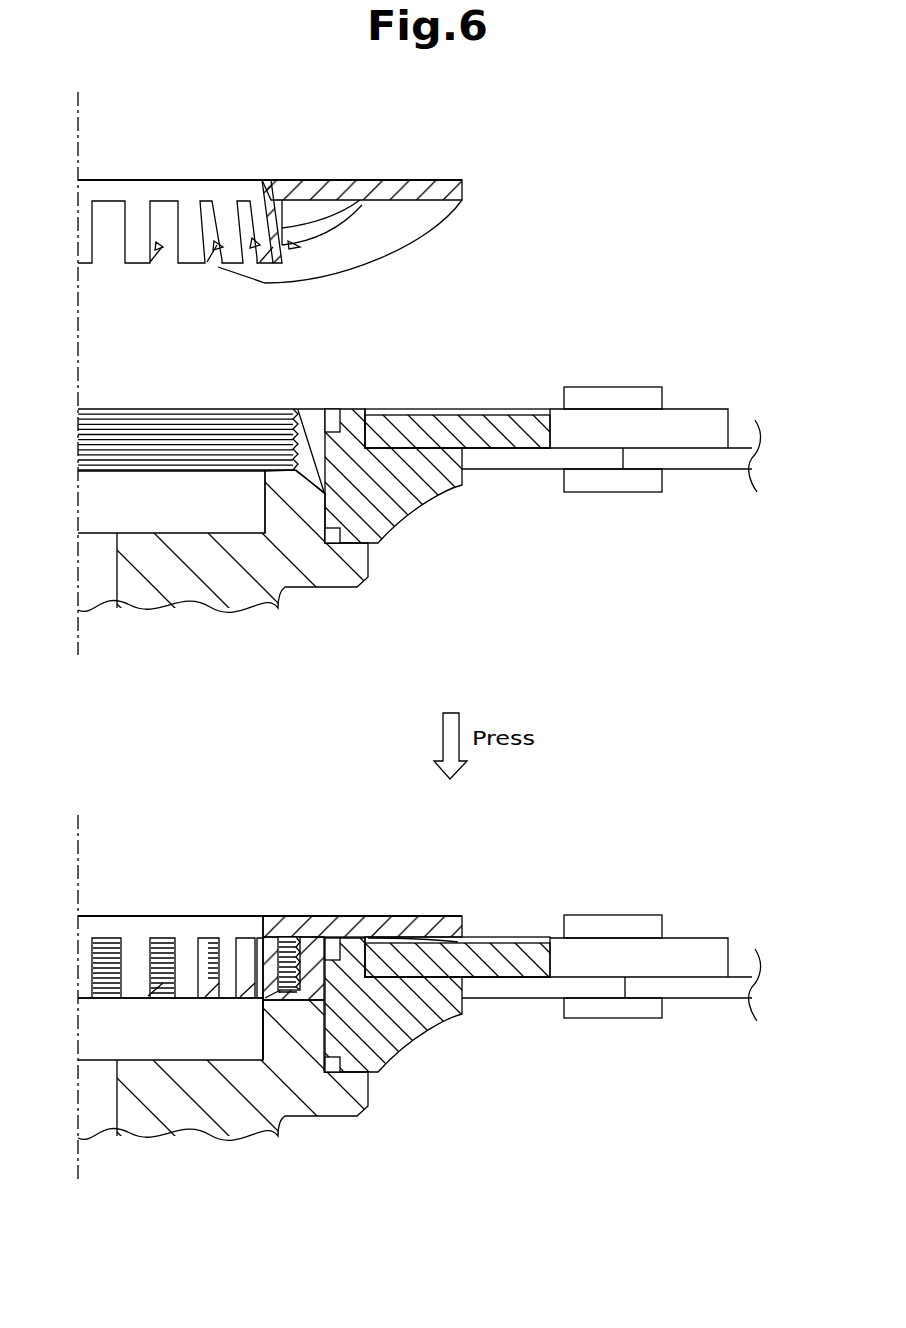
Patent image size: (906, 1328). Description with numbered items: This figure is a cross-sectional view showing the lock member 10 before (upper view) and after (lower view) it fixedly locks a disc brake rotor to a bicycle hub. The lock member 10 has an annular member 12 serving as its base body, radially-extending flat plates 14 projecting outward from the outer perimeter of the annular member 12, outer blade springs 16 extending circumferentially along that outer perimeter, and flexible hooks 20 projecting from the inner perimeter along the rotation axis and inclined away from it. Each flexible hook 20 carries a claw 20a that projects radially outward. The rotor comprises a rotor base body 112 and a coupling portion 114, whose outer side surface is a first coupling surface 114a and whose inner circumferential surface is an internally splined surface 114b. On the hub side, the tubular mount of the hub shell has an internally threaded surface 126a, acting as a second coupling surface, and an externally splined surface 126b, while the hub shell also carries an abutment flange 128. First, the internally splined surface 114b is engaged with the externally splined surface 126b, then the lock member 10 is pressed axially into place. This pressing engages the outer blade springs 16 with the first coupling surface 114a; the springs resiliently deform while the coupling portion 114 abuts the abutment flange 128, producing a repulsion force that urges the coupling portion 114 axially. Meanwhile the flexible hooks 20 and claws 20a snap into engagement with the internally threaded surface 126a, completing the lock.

The lock member 10 is at (148, 148).
The annular member 12 is at (314, 190).
The radially-extending flat plates 14 is at (395, 188).
The outer blade springs 16 is at (445, 222).
The flexible hook 20 is at (273, 217).
The claw 20a is at (290, 248).
The rotor base body 112 is at (745, 430).
The coupling portion 114 is at (437, 699).
The first coupling surface 114a is at (433, 408).
The internally splined surface 114b is at (333, 410).
The internally threaded surface 126a is at (294, 409).
The externally splined surface 126b is at (327, 500).
The abutment flange 128 is at (378, 546).